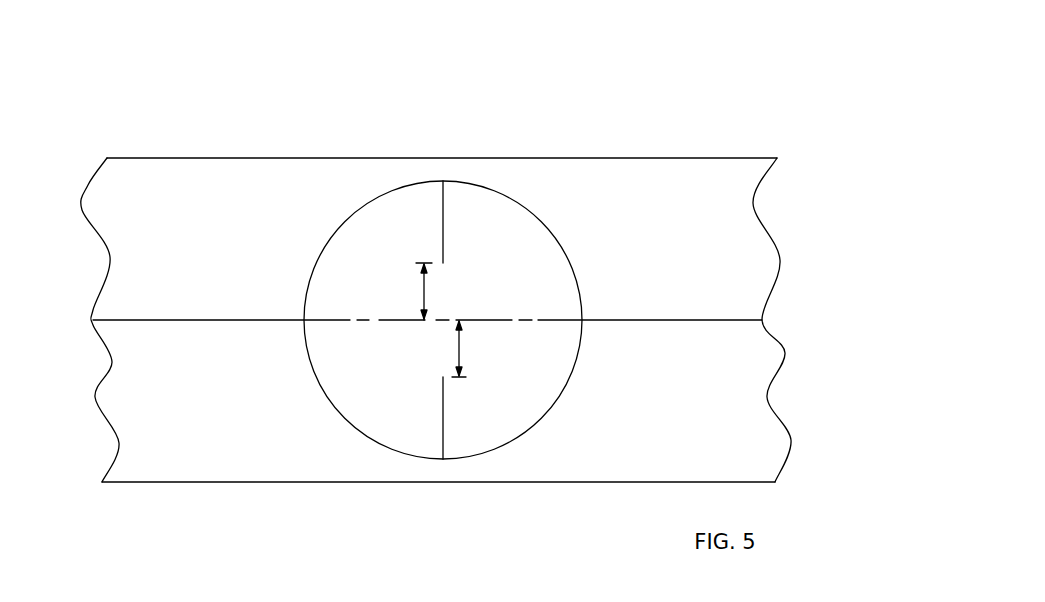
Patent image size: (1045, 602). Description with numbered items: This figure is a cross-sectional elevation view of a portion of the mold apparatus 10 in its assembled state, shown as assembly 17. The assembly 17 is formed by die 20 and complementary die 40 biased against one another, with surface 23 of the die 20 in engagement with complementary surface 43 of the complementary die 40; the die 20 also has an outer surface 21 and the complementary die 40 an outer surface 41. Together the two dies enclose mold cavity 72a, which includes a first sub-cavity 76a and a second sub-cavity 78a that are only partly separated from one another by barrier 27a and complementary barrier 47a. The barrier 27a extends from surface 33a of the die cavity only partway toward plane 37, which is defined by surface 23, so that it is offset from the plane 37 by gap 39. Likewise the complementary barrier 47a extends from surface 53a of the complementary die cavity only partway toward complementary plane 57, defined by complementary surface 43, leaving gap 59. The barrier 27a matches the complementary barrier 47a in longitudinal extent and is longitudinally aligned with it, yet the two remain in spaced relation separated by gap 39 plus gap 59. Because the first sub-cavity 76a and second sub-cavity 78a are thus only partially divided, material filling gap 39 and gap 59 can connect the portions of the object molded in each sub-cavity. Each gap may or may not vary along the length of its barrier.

The plate assembly 10 is at (796, 68).
The assembly 17 is at (142, 158).
The die 20 is at (745, 410).
The surface 21 is at (218, 483).
The surface 23 is at (148, 321).
The barrier 27a is at (443, 435).
The surface 33a is at (512, 433).
The plane 37 is at (537, 322).
The gap 39 is at (460, 352).
The complementary die 40 is at (745, 240).
The surface 41 is at (251, 158).
The complementary surface 43 is at (175, 320).
The complementary barrier 47a is at (443, 199).
The surface 53a is at (498, 191).
The complementary plane 57 is at (337, 320).
The gap 59 is at (422, 284).
The mold cavity 72a is at (482, 306).
The first sub-cavity 76a is at (528, 245).
The second sub-cavity 78a is at (395, 416).